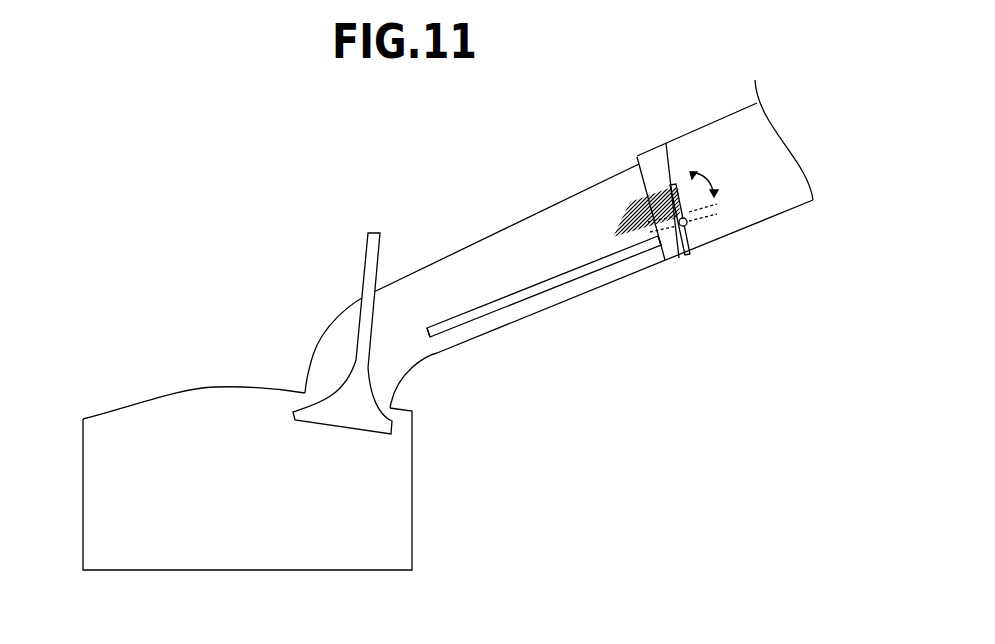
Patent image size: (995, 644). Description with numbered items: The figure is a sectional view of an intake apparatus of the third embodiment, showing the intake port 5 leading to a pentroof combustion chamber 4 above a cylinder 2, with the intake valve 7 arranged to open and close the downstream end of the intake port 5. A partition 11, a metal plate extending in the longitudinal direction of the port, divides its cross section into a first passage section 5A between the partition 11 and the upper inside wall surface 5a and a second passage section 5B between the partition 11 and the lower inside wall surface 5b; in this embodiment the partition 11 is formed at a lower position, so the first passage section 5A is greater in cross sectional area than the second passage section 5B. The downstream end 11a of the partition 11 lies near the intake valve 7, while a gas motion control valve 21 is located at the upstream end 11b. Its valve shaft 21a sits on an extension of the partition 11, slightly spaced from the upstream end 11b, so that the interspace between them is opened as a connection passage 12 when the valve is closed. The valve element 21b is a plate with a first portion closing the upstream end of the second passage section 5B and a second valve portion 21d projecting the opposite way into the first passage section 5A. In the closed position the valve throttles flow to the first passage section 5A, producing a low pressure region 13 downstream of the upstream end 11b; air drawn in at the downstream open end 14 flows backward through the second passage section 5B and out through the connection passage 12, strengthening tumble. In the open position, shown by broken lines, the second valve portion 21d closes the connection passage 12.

The cylinder 2 is at (83, 522).
The combustion chamber 4 is at (152, 415).
The intake port 5 is at (522, 237).
The first passage section 5A is at (470, 267).
The second passage section 5B is at (530, 308).
The upper inside wall surface 5a is at (548, 207).
The lower inside wall surface 5b is at (594, 292).
The intake valve 7 is at (343, 418).
The partition 11 is at (462, 322).
The downstream end of partition 11a is at (426, 333).
The upstream end of partition 11b is at (655, 246).
The connection passage 12 is at (664, 252).
The low pressure region 13 is at (624, 205).
The downstream open end 14 is at (438, 356).
The gas motion control valve 21 is at (725, 218).
The valve shaft 21a is at (685, 238).
The valve element 21b is at (695, 236).
The second valve portion 21d is at (676, 186).